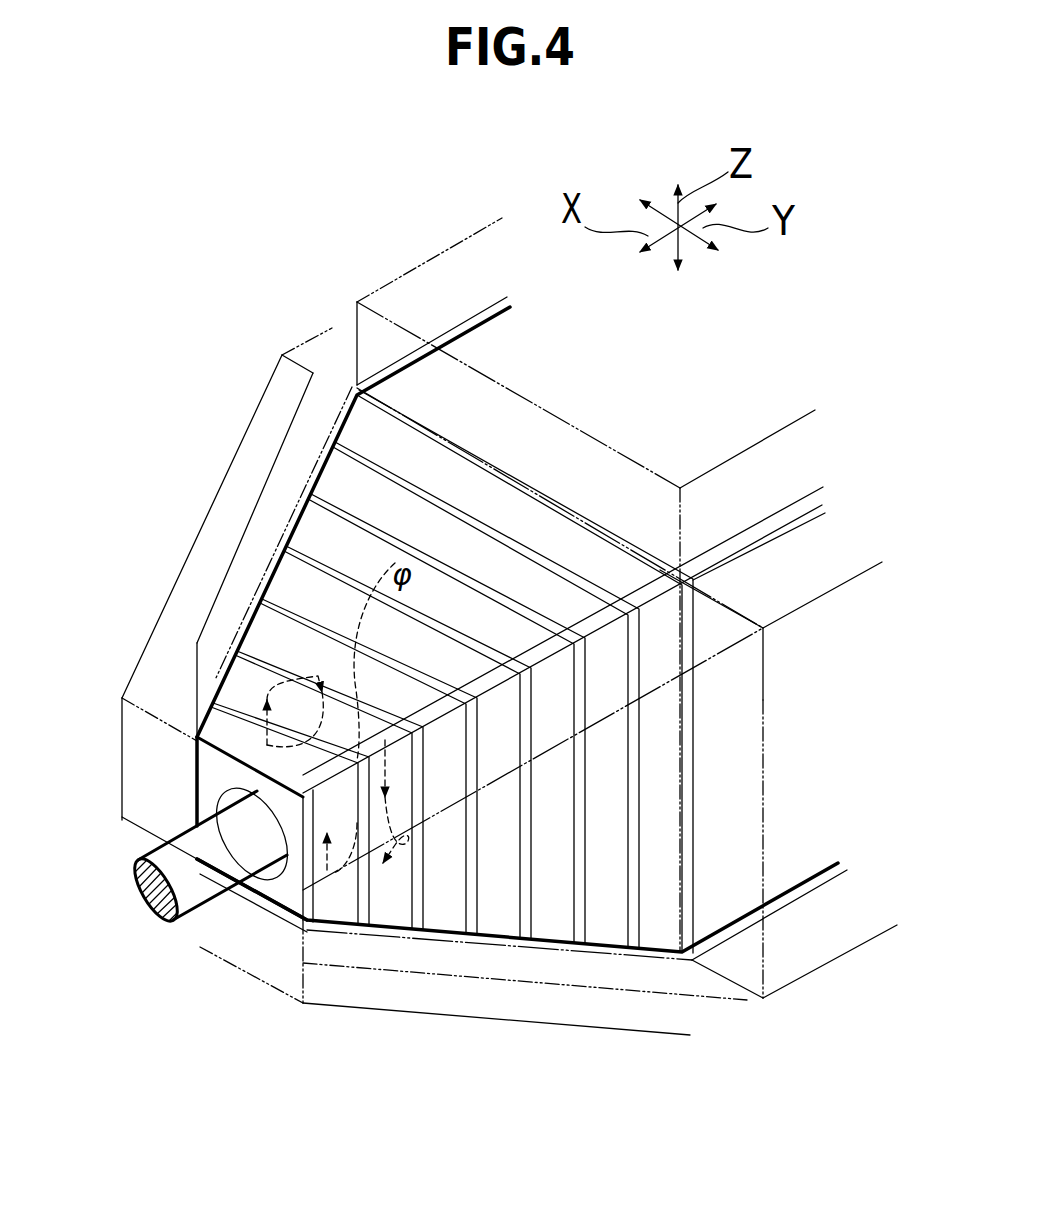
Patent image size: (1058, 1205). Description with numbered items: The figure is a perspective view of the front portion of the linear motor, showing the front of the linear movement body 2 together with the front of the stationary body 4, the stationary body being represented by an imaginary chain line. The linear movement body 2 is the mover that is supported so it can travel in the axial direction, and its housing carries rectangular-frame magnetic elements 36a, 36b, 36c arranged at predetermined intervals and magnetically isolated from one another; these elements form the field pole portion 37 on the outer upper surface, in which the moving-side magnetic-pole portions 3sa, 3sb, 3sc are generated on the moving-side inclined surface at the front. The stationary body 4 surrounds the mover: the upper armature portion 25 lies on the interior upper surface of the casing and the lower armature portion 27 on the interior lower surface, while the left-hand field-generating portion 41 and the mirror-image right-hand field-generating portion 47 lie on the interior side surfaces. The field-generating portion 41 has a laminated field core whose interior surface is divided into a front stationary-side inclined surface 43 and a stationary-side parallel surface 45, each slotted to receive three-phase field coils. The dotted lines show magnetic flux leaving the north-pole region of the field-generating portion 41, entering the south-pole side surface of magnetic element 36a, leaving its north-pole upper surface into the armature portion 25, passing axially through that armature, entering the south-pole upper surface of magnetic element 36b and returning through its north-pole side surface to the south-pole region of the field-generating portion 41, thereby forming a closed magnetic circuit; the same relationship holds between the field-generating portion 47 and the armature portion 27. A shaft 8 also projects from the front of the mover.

The linear movement body 2 is at (463, 326).
The stationary body 4 is at (365, 266).
The shaft 8 is at (175, 927).
The armature portion 25 is at (487, 690).
The armature portion 27 is at (266, 904).
The magnetic element 36a is at (336, 928).
The magnetic element 36b is at (404, 928).
The magnetic element 36c is at (458, 928).
The field pole portion 37 is at (320, 520).
The moving-side magnetic-pole portion 3sa is at (226, 705).
The moving-side magnetic-pole portion 3sb is at (248, 650).
The moving-side magnetic-pole portion 3sc is at (255, 600).
The field-generating portion 41 is at (603, 638).
The stationary-side inclined surface 43 is at (633, 595).
The stationary-side parallel surface 45 is at (787, 533).
The field-generating portion 47 is at (185, 760).